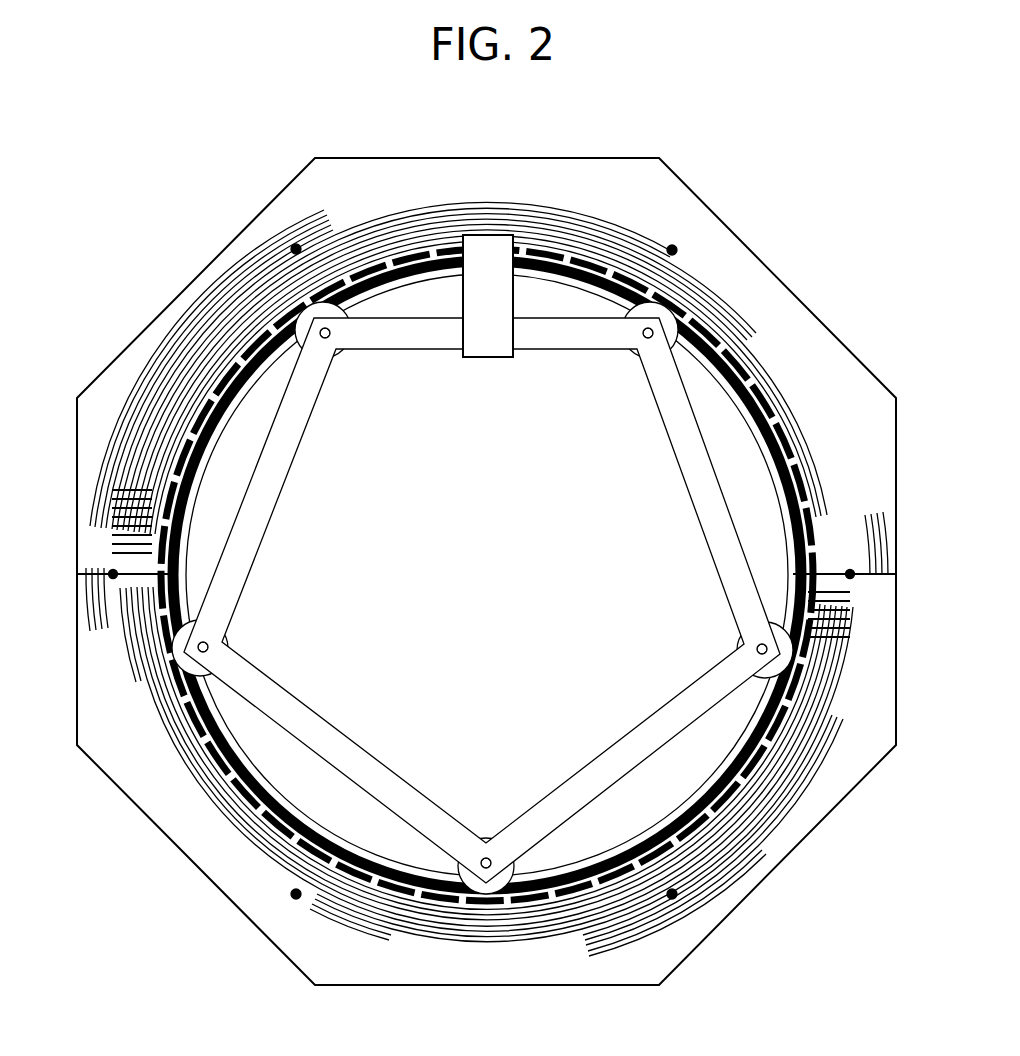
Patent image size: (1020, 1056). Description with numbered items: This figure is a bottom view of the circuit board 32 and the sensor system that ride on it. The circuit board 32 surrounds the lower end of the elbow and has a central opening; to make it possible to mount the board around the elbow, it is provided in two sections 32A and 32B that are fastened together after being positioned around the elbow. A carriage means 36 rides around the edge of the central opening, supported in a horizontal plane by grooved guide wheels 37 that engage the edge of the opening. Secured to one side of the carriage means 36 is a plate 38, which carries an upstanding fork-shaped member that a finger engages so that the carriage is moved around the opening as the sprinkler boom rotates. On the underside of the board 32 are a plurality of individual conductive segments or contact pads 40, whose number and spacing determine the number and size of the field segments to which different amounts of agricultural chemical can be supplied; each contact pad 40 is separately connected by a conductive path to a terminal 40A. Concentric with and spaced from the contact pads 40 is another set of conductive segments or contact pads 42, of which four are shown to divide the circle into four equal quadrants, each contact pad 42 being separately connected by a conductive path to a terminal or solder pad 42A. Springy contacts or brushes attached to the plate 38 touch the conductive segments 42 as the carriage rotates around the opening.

The circuit board 32 is at (272, 148).
The circuit board section 32A is at (570, 190).
The circuit board section 32B is at (190, 824).
The carriage means 36 is at (676, 477).
The grooved guide wheels 37 is at (226, 647).
The plate 38 is at (500, 293).
The conductive segments or contact pads 40 is at (767, 380).
The terminal 40A is at (818, 548).
The conductive segments or contact pads 42 is at (432, 248).
The terminal or solder pad 42A is at (865, 564).